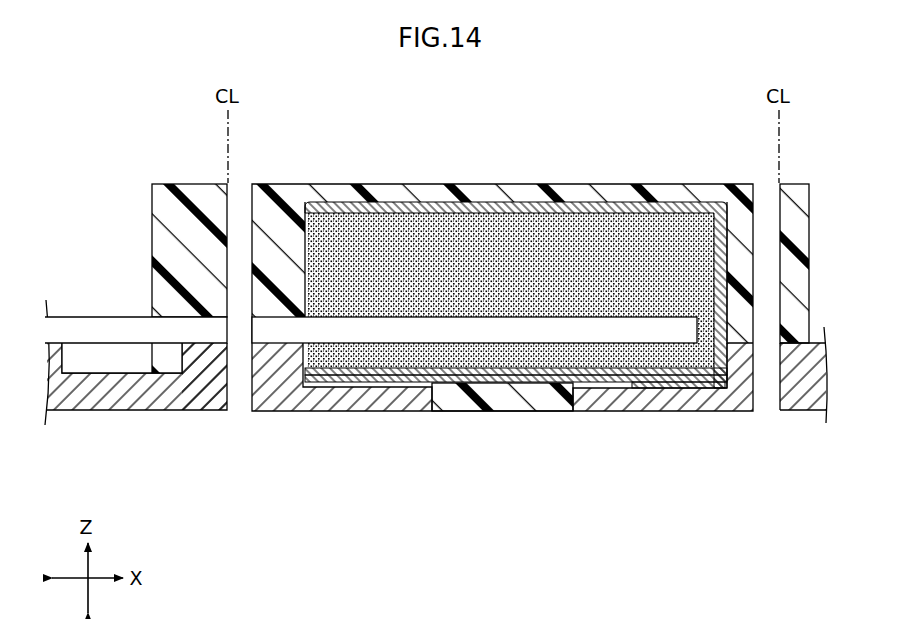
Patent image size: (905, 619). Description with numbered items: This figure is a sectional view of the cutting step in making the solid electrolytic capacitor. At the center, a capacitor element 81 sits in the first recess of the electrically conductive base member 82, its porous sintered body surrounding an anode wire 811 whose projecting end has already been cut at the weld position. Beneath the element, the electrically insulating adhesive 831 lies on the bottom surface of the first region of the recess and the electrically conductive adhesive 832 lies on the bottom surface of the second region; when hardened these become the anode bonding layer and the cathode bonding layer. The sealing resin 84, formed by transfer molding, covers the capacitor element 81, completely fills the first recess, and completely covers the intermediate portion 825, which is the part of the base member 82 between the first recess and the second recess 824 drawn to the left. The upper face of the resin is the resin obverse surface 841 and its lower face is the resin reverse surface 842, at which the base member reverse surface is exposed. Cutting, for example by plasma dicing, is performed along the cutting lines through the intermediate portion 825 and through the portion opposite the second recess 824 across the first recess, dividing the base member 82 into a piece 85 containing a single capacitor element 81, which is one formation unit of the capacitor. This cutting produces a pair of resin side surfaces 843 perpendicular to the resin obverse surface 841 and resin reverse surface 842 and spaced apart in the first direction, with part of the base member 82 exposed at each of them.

The piece 85 is at (498, 307).
The capacitor element 81 is at (489, 314).
The anode wire 811 is at (282, 326).
The electrically conductive base member 82 is at (90, 414).
The second recess 824 is at (110, 361).
The intermediate portion 825 is at (207, 353).
The electrically insulating adhesive 831 is at (343, 383).
The electrically conductive adhesive 832 is at (673, 389).
The sealing resin 84 is at (498, 312).
The resin obverse surface 841 is at (525, 184).
The resin reverse surface 842 is at (512, 413).
The resin side surfaces 843 is at (250, 298).